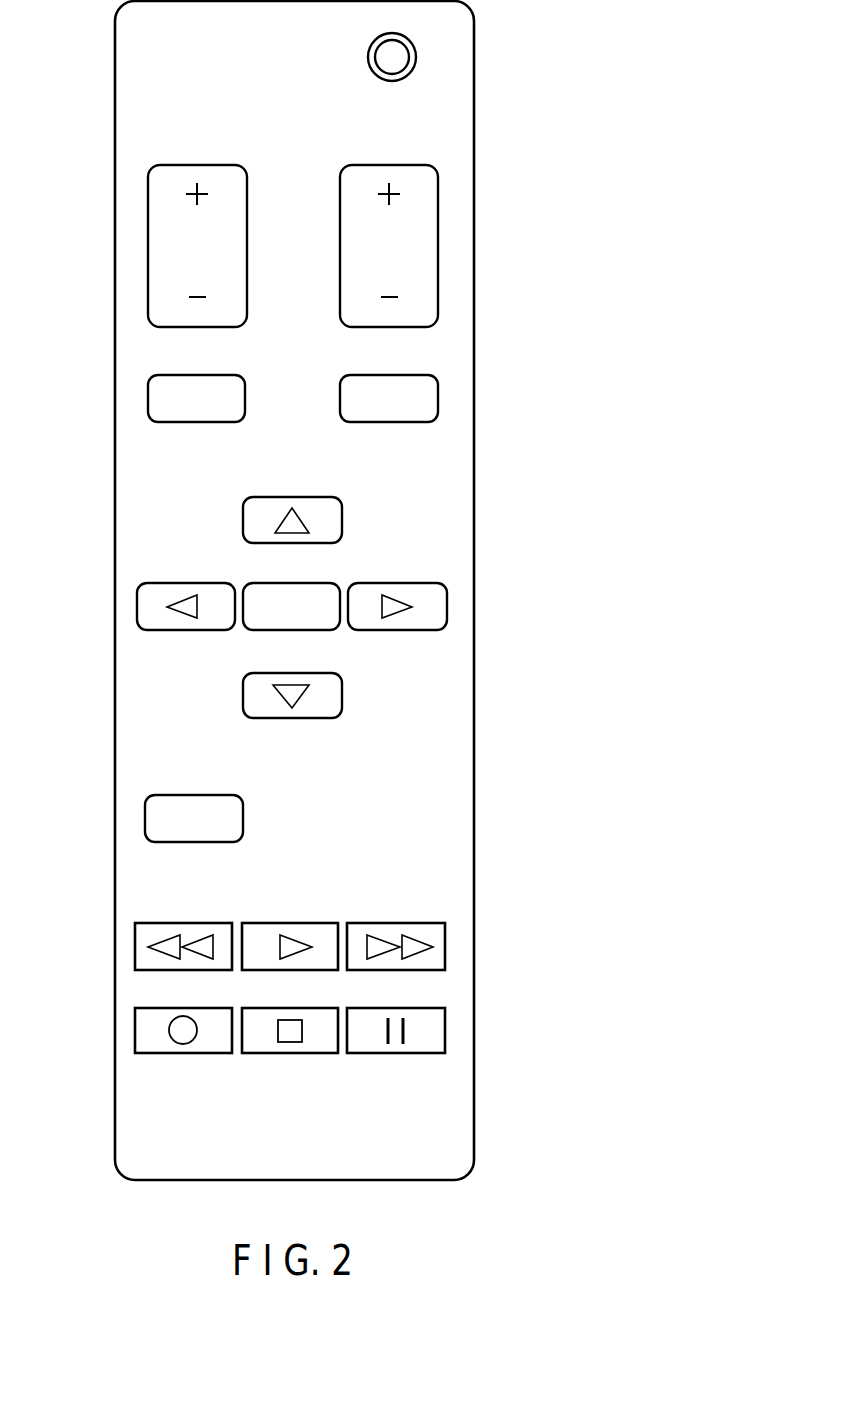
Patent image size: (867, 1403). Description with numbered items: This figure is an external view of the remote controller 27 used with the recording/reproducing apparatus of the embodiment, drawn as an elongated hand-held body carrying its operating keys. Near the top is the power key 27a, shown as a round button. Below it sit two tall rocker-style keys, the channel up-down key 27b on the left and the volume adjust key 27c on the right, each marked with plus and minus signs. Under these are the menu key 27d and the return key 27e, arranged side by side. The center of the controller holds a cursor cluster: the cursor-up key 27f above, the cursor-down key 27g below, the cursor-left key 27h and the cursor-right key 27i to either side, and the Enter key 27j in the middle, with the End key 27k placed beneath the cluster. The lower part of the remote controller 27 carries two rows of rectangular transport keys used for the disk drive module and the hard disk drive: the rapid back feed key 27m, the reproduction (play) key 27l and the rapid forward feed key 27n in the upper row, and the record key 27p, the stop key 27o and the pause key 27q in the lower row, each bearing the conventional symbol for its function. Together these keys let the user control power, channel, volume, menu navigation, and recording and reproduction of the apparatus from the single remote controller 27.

The remote controller 27 is at (115, 22).
The power key 27a is at (368, 57).
The channel up-down key 27b is at (215, 165).
The volume adjust key 27c is at (416, 165).
The menu key 27d is at (148, 404).
The return key 27e is at (438, 400).
The cursor-up key 27f is at (342, 518).
The cursor-down key 27g is at (342, 696).
The cursor-left key 27h is at (137, 608).
The cursor-right key 27i is at (447, 606).
The Enter key 27j is at (277, 630).
The End key 27k is at (243, 818).
The reproduction (play) key 27l is at (295, 923).
The rapid back feed key 27m is at (187, 923).
The rapid forward feed key 27n is at (396, 923).
The stop key 27o is at (290, 1053).
The record key 27p is at (182, 1053).
The pause key 27q is at (398, 1053).